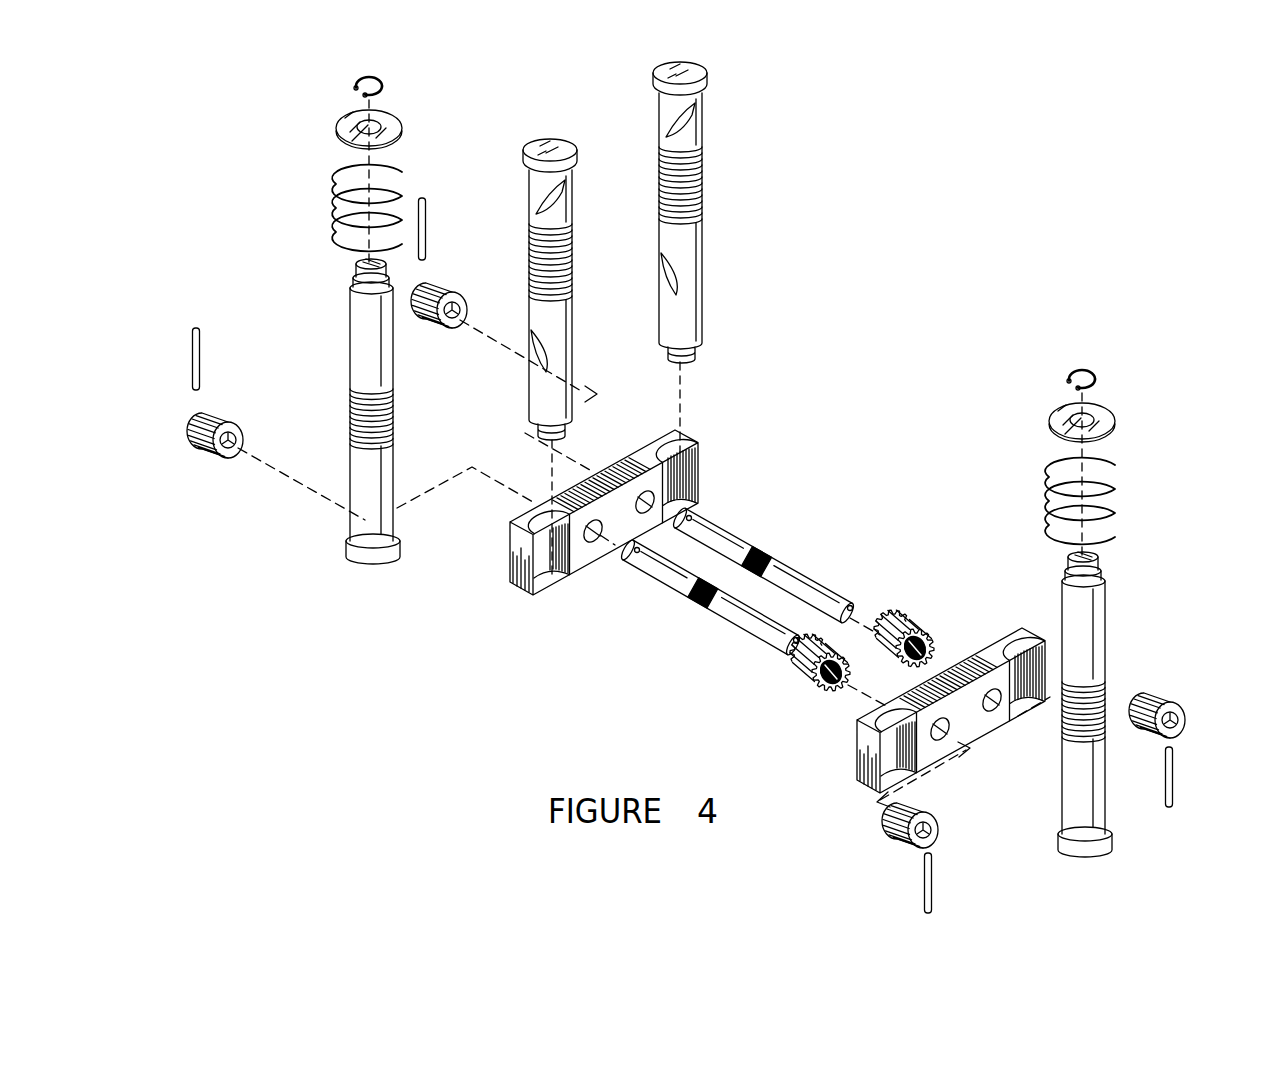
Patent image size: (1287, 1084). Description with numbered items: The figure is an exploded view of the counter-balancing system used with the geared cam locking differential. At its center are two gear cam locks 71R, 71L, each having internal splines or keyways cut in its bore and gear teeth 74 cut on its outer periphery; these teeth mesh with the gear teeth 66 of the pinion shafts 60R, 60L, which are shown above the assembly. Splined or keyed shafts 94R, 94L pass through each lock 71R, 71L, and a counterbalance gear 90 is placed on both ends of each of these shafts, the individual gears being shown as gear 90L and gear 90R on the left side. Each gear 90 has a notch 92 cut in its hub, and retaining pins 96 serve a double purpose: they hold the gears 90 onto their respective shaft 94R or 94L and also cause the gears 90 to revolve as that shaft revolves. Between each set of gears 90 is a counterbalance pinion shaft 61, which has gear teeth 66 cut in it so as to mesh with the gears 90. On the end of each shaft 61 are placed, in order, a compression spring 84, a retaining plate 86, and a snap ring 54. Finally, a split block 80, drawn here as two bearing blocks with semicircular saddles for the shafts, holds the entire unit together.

The snap ring 54 is at (385, 87).
The retaining plate 86 is at (400, 128).
The compression spring 84 is at (340, 208).
The counterbalance pinion shaft 61 is at (368, 312).
The gear teeth 66 is at (387, 430).
The retaining pins 96 is at (197, 332).
The notch 92 is at (203, 417).
The counterbalance gear 90 is at (900, 837).
The counterbalance gear 90L is at (213, 458).
The counterbalance gear 90R is at (452, 328).
The pinion shaft 60L is at (550, 145).
The pinion shaft 60R is at (700, 105).
The split block 80 is at (702, 468).
The splined or keyed shaft 94L is at (698, 608).
The splined or keyed shaft 94R is at (765, 550).
The gear cam lock 71L is at (815, 645).
The gear cam lock 71R is at (893, 615).
The gear teeth 74 is at (823, 697).